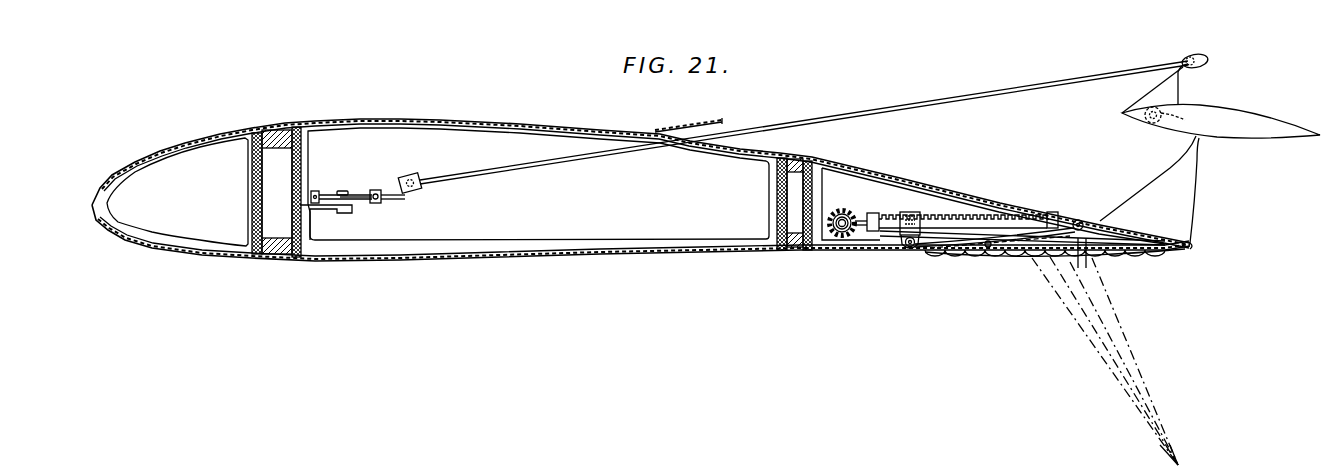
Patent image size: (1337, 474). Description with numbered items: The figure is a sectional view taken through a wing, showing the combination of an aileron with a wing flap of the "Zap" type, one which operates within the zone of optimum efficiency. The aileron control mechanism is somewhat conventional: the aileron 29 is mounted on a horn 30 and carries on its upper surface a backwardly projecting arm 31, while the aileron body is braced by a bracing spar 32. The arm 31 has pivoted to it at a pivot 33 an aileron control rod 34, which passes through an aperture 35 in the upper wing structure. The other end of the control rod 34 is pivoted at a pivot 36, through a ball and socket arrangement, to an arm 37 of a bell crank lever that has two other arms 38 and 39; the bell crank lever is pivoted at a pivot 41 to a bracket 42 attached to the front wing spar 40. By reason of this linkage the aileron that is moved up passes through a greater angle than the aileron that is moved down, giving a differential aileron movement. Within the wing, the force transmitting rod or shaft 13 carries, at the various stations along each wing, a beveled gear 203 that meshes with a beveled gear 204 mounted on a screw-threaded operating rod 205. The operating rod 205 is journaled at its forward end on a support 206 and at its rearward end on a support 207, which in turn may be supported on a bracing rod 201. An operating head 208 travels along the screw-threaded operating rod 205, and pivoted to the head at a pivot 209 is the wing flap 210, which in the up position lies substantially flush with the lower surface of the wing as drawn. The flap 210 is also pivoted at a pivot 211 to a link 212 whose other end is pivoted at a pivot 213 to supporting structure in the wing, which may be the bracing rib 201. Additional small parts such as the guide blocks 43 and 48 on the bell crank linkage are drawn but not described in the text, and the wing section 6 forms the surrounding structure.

The fuselage 6 is at (567, 123).
The force transmitting rod 13 is at (843, 210).
The aileron 29 is at (1262, 121).
The horn 30 is at (1188, 180).
The arm 31 is at (1178, 88).
The bracing spar 32 is at (1147, 123).
The pivot 33 is at (1199, 55).
The aileron control rod 34 is at (874, 110).
The aperture 35 is at (719, 123).
The pivot 36 is at (414, 173).
The arm of bell crank lever 37 is at (406, 200).
The arm of bell crank lever 38 is at (325, 194).
The arm of bell crank lever 39 is at (357, 194).
The front wing spar 40 is at (256, 190).
The pivot 41 is at (345, 190).
The bracket 42 is at (318, 213).
The guide block 43 is at (316, 190).
The guide block 48 is at (379, 188).
The bracing rod 201 is at (870, 200).
The beveled gear 203 is at (836, 237).
The beveled gear 204 is at (858, 230).
The screw-threaded operating rod 205 is at (969, 217).
The support 206 is at (877, 212).
The support 207 is at (1053, 212).
The operating head 208 is at (918, 212).
The pivot 209 is at (910, 250).
The wing flap 210 is at (1110, 258).
The pivot 211 is at (990, 250).
The link 212 is at (1052, 257).
The pivot 213 is at (1082, 221).